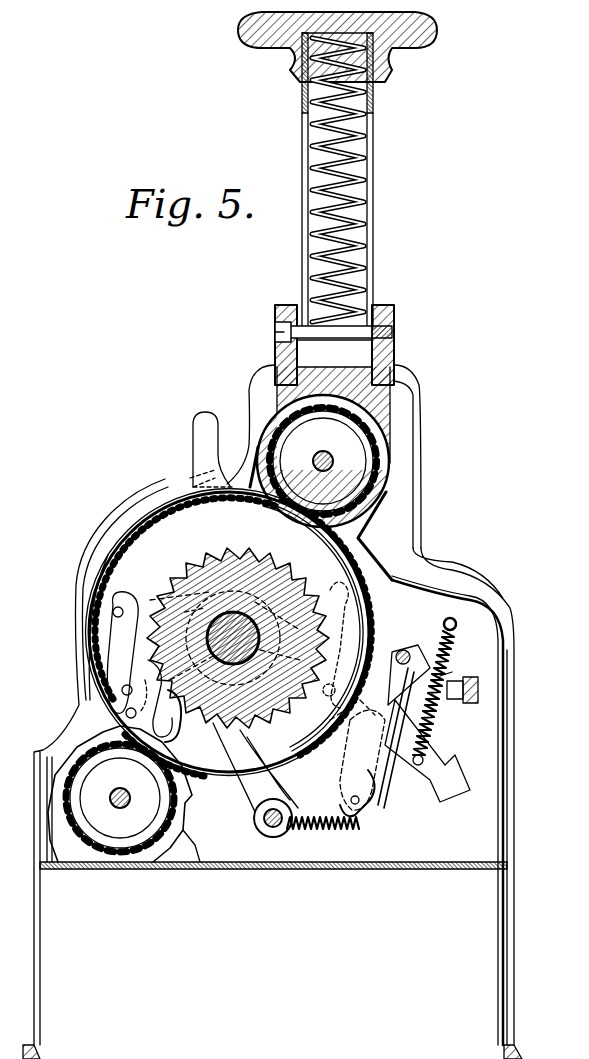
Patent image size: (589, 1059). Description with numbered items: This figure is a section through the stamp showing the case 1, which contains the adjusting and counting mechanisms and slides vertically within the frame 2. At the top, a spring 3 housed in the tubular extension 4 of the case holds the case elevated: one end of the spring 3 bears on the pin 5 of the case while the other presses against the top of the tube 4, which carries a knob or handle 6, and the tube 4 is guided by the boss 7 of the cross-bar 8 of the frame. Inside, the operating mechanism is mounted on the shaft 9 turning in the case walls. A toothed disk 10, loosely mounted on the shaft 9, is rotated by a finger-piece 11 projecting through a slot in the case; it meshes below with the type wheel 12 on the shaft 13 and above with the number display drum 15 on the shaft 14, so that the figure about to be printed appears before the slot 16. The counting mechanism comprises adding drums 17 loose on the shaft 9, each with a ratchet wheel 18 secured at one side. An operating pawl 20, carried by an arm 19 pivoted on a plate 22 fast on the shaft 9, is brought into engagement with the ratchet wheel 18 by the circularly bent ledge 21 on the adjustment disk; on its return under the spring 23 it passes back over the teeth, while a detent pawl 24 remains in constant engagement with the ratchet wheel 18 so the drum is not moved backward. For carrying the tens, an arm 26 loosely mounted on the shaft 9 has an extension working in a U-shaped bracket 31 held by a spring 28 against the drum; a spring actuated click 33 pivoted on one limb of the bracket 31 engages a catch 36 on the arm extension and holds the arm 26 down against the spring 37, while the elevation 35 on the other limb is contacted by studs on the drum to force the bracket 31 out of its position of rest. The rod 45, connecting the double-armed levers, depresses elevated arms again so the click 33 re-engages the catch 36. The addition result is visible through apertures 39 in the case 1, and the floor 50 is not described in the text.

The case 1 is at (378, 512).
The frame 2 is at (104, 528).
The spring 3 is at (365, 170).
The tubular extension 4 is at (375, 113).
The pin 5 is at (393, 338).
The knob or handle 6 is at (397, 46).
The boss 7 is at (388, 308).
The cross-bar 8 is at (408, 378).
The shaft 9 is at (205, 568).
The toothed disk 10 is at (170, 495).
The finger-piece 11 is at (212, 420).
The type wheel 12 is at (105, 870).
The shaft 13 is at (132, 798).
The shaft 14 is at (323, 461).
The number display drum 15 is at (395, 470).
The slot 16 is at (268, 370).
The drum 17 is at (80, 555).
The ratchet wheel 18 is at (180, 595).
The arm 19 is at (132, 640).
The operating pawl 20 is at (135, 668).
The ledge 21 is at (300, 528).
The plate 22 is at (110, 636).
The spring 23 is at (172, 722).
The detent pawl 24 is at (258, 775).
The arm 26 is at (450, 788).
The spring 28 is at (318, 830).
The U-shaped bracket 31 is at (428, 722).
The click 33 is at (383, 785).
The elevation 35 is at (345, 770).
The catch 36 is at (372, 808).
The spring 37 is at (440, 676).
The apertures 39 is at (370, 558).
The rod 45 is at (480, 694).
The floor 50 is at (380, 872).